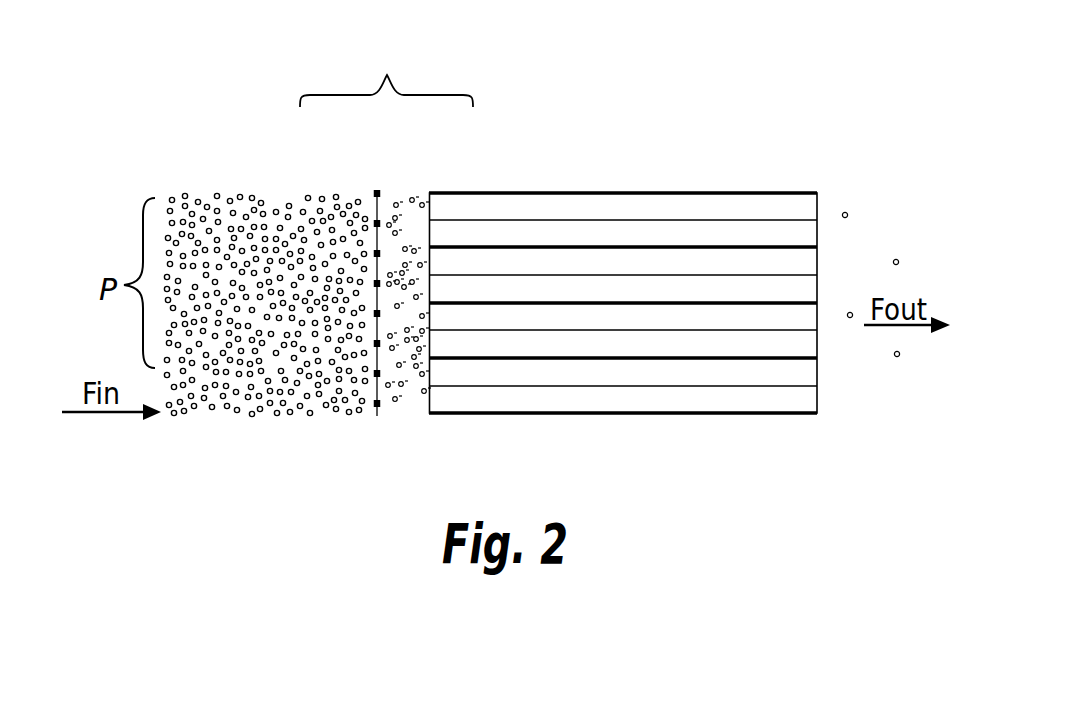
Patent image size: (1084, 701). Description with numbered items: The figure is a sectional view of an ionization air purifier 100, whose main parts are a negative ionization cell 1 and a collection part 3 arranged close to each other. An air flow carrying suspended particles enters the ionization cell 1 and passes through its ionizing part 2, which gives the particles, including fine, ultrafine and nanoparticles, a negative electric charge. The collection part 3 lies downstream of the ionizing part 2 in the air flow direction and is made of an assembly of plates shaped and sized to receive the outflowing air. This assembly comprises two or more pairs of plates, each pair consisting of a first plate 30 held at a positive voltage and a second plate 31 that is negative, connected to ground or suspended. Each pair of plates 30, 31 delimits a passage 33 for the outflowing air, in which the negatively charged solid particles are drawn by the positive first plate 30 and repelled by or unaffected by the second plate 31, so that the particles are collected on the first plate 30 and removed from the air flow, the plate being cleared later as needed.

The ionization air purifier 100 is at (386, 75).
The negative ionization cell 1 is at (371, 131).
The ionizing part 2 is at (379, 185).
The collection part 3 is at (620, 178).
The first plate 30 is at (732, 300).
The second plate 31 is at (663, 212).
The passage 33 is at (498, 288).